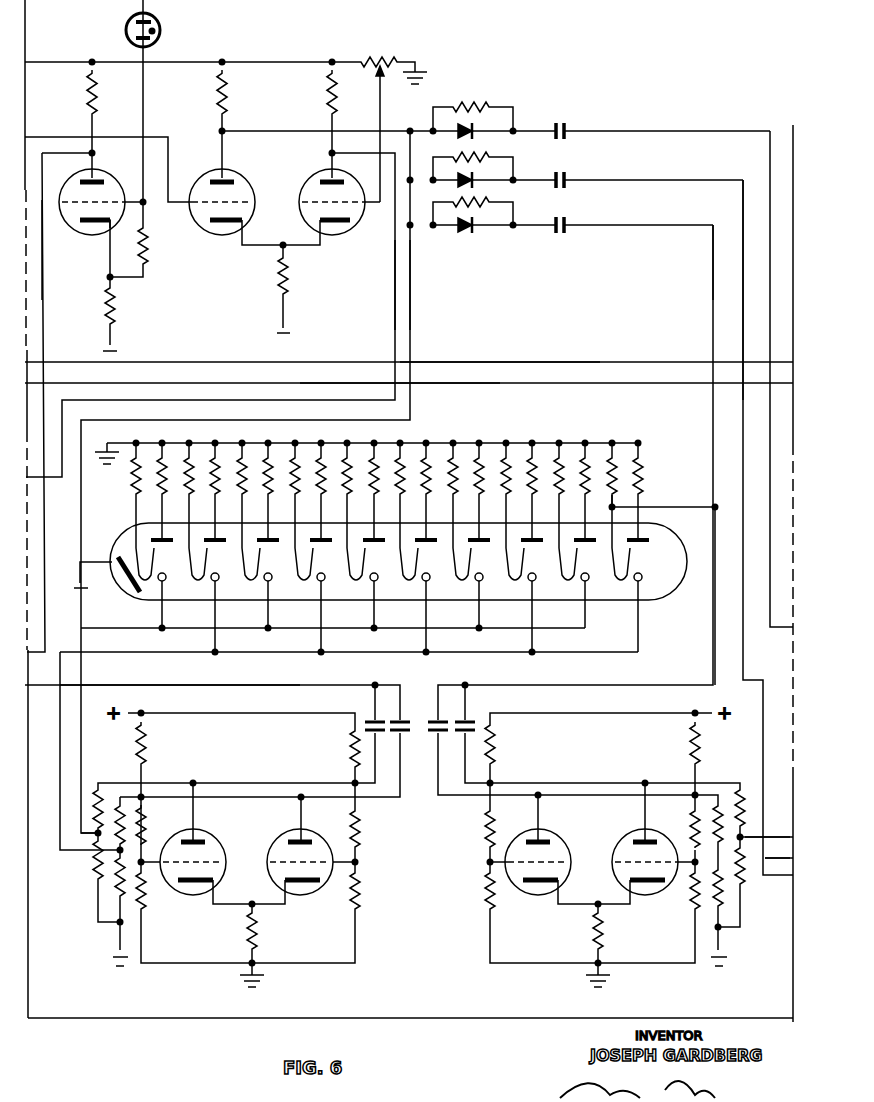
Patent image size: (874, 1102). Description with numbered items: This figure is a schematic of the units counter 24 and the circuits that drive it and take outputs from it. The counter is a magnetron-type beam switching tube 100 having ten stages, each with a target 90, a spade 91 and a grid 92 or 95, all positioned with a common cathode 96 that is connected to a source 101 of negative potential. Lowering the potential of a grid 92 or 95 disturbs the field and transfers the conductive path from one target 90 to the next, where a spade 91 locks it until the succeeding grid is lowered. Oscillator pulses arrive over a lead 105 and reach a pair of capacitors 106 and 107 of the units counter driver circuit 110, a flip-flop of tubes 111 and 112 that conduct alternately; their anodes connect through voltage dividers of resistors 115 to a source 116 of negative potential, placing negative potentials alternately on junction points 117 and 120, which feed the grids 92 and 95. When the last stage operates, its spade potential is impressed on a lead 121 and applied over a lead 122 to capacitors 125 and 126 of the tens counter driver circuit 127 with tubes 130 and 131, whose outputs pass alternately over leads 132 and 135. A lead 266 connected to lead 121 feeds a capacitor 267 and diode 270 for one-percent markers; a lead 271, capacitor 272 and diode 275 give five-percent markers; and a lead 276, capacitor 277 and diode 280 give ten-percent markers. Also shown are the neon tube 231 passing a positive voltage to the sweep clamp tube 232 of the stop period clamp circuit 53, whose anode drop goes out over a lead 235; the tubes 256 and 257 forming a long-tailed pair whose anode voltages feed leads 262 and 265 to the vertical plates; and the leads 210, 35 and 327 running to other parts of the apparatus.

The D.C. dropping neon tube 231 is at (160, 24).
The sweep clamp tube 232 is at (104, 170).
The tube 256 is at (214, 172).
The tube 257 is at (328, 172).
The lead 235 is at (44, 256).
The stop period clamp circuit 53 is at (97, 284).
The diode 280 is at (474, 138).
The diode 275 is at (474, 187).
The diode 270 is at (474, 232).
The differentiating capacitor 277 is at (558, 122).
The differentiating capacitor 272 is at (558, 171).
The capacitor 267 is at (558, 216).
The lead 276 is at (770, 152).
The lead 271 is at (743, 200).
The lead 266 is at (713, 245).
The lead 262 is at (412, 291).
The lead 265 is at (394, 290).
The lead 210 is at (516, 362).
The lead 35 is at (425, 384).
The units counter 24 is at (641, 426).
The lead 121 is at (655, 507).
The lead 122 is at (715, 643).
The magnetron-type beam switching tube 100 is at (125, 527).
The cathode 96 is at (118, 558).
The source of negative potential 101 is at (80, 598).
The target 90 is at (479, 538).
The spade 91 is at (471, 560).
The grid 92 is at (479, 583).
The grid 95 is at (532, 583).
The lead 105 is at (148, 685).
The capacitor 106 is at (368, 720).
The capacitor 107 is at (408, 728).
The capacitor 125 is at (436, 735).
The capacitor 126 is at (473, 722).
The resistors 115 is at (100, 880).
The junction point 117 is at (96, 838).
The junction point 120 is at (143, 845).
The source of negative potential 116 is at (118, 975).
The units counter driver circuit 110 is at (258, 850).
The tube 112 is at (203, 842).
The tube 111 is at (306, 842).
The tens counter driver circuit 127 is at (596, 850).
The tube 130 is at (532, 842).
The tube 131 is at (650, 842).
The lead 132 is at (773, 836).
The lead 135 is at (788, 878).
The lead 327 is at (383, 1018).